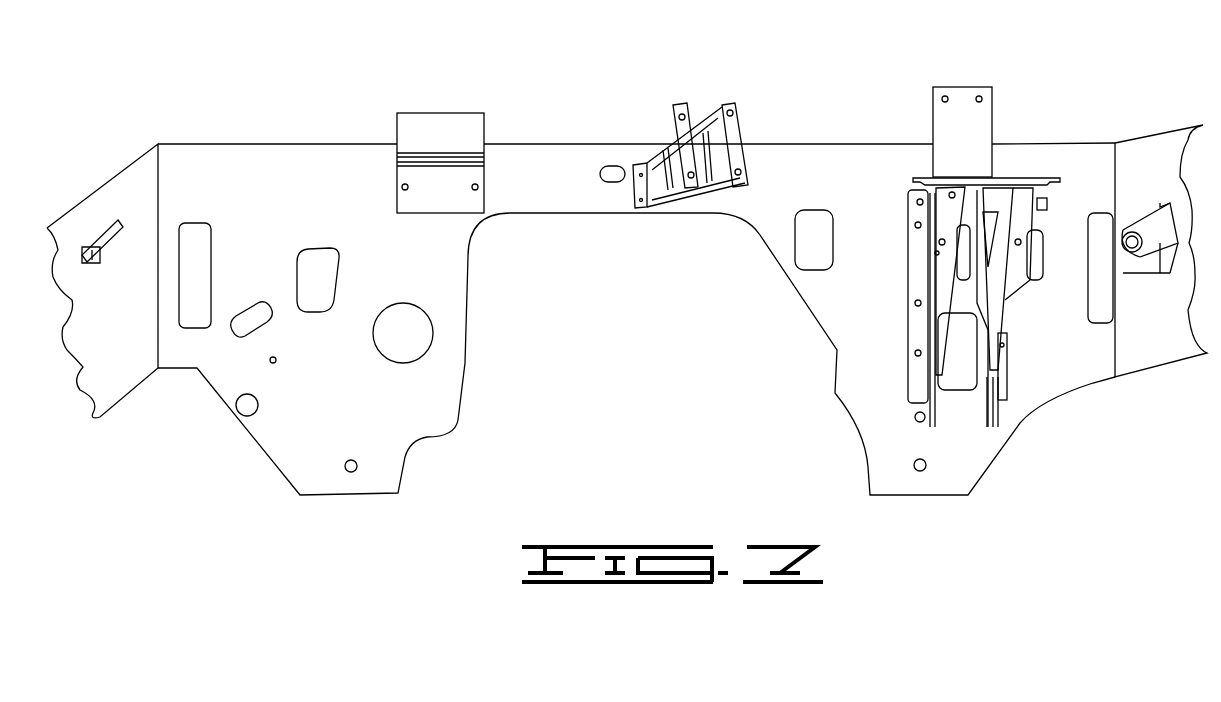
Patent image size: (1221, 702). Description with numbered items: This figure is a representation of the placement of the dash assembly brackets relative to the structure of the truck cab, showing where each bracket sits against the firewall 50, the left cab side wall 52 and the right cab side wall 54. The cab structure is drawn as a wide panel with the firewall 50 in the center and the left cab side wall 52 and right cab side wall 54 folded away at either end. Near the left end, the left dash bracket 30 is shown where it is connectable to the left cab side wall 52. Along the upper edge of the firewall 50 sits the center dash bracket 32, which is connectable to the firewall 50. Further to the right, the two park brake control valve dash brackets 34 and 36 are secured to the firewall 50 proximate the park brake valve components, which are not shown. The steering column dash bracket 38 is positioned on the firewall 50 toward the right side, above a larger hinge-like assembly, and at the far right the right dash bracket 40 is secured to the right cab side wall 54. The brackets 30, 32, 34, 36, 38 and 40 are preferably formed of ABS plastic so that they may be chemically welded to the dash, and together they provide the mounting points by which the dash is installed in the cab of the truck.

The left dash bracket 30 is at (102, 232).
The center dash bracket 32 is at (442, 110).
The park brake control valve dash bracket 34 is at (680, 102).
The park brake control valve dash bracket 36 is at (748, 103).
The steering column dash bracket 38 is at (963, 87).
The right dash bracket 40 is at (1168, 275).
The firewall 50 is at (342, 168).
The left cab side wall 52 is at (134, 185).
The right cab side wall 54 is at (1168, 163).